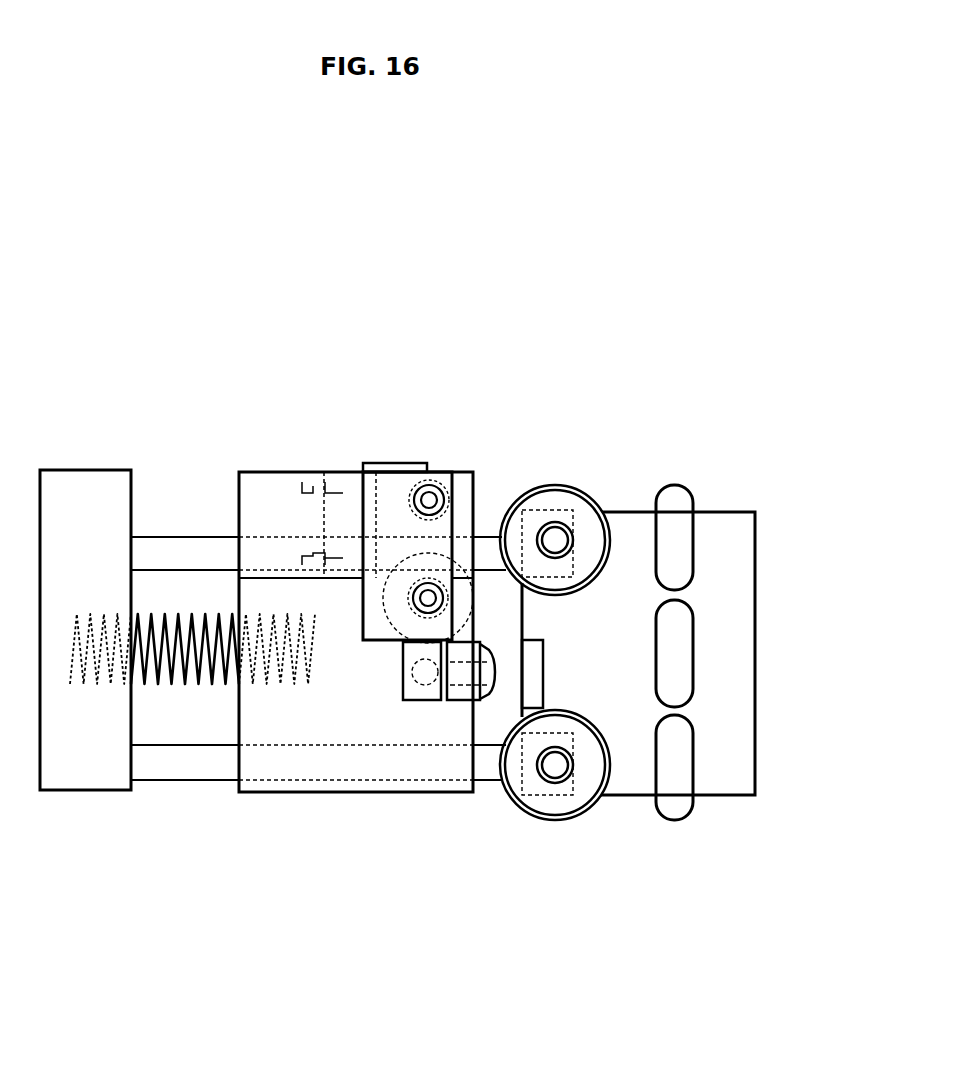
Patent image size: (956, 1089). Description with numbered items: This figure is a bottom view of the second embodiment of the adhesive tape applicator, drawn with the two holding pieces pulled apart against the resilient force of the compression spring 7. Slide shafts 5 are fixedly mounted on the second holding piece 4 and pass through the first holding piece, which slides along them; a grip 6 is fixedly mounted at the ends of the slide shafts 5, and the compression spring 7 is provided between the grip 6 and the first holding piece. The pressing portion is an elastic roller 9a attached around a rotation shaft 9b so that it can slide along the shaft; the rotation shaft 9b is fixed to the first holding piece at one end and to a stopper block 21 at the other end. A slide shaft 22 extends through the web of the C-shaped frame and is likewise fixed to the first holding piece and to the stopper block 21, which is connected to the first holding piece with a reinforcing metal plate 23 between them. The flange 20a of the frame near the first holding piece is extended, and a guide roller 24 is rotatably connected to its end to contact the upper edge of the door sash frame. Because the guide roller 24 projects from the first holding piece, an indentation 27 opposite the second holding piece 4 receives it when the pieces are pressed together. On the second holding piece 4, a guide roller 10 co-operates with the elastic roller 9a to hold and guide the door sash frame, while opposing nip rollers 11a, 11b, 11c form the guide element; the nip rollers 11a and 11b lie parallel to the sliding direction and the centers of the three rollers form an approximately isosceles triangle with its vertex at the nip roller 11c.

The second holding piece 4 is at (762, 772).
The slide shaft 5 is at (195, 540).
The grip 6 is at (103, 487).
The compression spring 7 is at (200, 697).
The elastic roller 9a is at (467, 497).
The rotation shaft 9b is at (415, 610).
The guide roller 10 is at (552, 483).
The nip roller 11a is at (673, 487).
The nip roller 11b is at (680, 822).
The nip roller 11c is at (677, 653).
The flange 20a is at (412, 700).
The stopper block 21 is at (365, 508).
The slide shaft 22 is at (440, 480).
The reinforcing metal plate 23 is at (407, 462).
The guide roller 24 is at (457, 700).
The indentation 27 is at (537, 667).